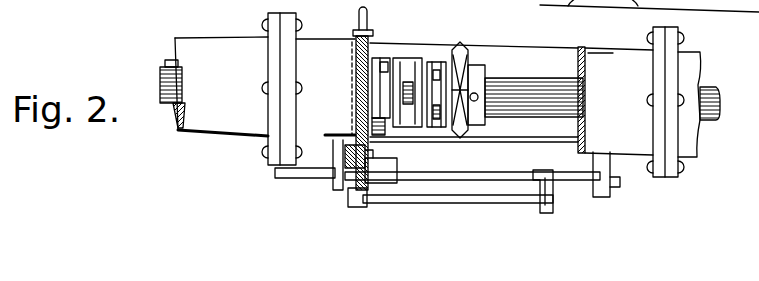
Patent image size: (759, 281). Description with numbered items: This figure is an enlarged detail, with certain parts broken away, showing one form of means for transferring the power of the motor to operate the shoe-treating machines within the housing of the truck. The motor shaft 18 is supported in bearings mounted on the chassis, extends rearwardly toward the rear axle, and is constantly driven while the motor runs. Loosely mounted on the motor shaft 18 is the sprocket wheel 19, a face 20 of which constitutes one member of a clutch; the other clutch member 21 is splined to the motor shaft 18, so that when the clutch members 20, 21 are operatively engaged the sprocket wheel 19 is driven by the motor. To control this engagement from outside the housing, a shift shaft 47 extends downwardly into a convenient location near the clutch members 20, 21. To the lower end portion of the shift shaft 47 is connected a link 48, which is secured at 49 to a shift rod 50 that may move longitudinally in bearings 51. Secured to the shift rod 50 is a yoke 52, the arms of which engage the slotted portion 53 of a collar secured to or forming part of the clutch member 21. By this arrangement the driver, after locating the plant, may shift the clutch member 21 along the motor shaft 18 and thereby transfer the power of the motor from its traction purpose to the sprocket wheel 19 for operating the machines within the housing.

The motor shaft 18 is at (163, 70).
The sprocket wheel 19 is at (466, 56).
The clutch face 20 is at (445, 58).
The clutch member 21 is at (403, 58).
The shift shaft 47 is at (358, 22).
The link 48 is at (440, 203).
The securing point 49 is at (553, 208).
The shift rod 50 is at (505, 198).
The bearings 51 is at (333, 182).
The yoke 52 is at (392, 153).
The slotted portion 53 is at (356, 56).